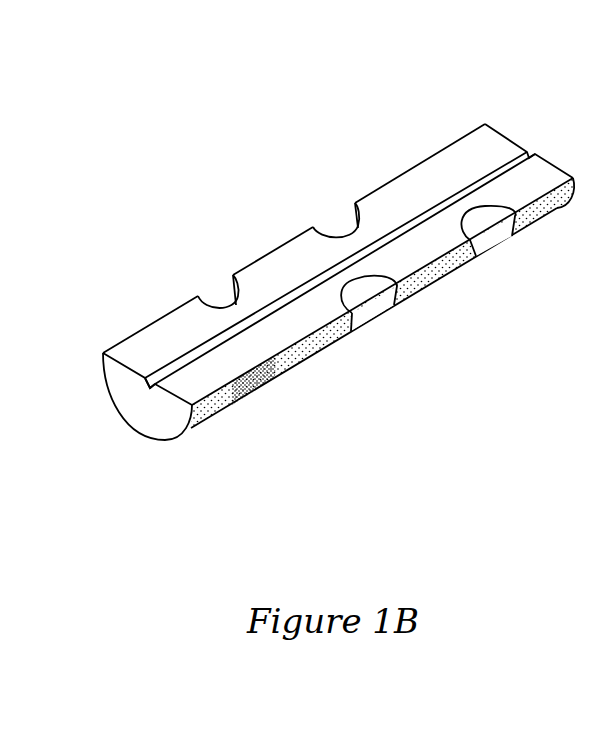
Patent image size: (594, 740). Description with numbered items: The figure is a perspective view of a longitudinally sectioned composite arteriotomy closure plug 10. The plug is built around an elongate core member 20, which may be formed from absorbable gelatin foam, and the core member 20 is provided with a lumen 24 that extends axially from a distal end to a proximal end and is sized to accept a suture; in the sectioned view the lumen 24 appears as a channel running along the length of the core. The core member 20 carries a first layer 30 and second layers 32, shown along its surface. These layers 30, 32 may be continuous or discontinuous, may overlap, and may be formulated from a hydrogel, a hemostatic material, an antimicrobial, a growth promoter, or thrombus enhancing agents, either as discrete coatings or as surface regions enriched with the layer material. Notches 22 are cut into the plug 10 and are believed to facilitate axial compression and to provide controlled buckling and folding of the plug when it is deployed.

The composite arteriotomy closure plug 10 is at (262, 124).
The elongate core member 20 is at (292, 262).
The notches 22 is at (218, 300).
The lumen 24 is at (143, 380).
The first layer 30 is at (254, 396).
The second layers 32 is at (207, 408).